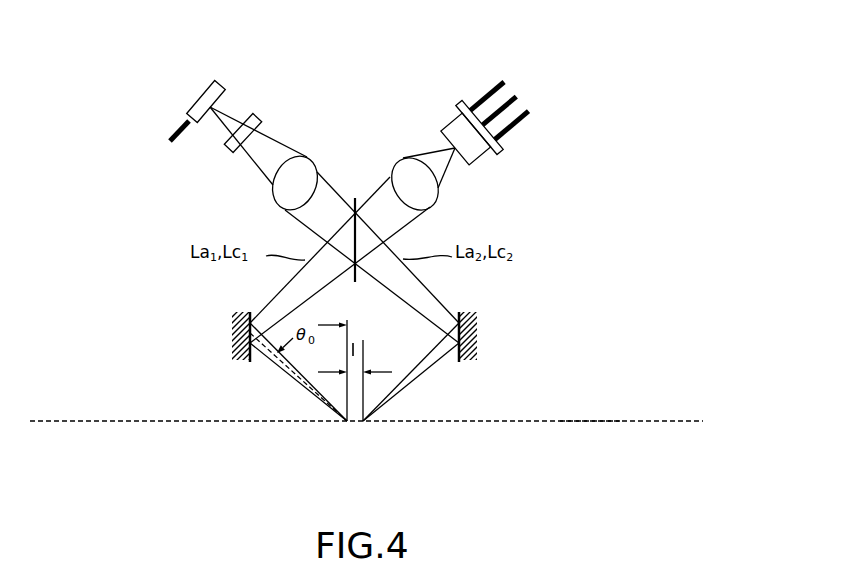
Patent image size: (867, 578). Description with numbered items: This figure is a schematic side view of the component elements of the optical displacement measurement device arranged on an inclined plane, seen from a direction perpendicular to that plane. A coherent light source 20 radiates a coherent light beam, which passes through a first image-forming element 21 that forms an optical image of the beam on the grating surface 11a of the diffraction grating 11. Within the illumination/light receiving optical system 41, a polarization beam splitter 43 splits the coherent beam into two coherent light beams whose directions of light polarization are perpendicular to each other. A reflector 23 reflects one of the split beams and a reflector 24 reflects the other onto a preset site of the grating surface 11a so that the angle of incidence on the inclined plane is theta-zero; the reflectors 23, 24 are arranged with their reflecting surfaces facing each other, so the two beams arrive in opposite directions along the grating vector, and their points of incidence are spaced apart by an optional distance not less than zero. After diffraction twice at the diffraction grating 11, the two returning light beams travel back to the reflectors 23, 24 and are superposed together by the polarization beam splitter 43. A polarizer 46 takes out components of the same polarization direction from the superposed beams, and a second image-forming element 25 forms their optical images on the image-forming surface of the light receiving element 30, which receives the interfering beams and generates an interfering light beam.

The diffraction grating 11 is at (592, 425).
The grating surface 11a is at (592, 413).
The coherent light source 20 is at (459, 103).
The first image-forming element 21 is at (402, 165).
The reflector 23 is at (232, 322).
The reflector 24 is at (478, 328).
The second image-forming element 25 is at (282, 202).
The light receiving element 30 is at (208, 80).
The illumination/light receiving optical system 41 is at (208, 190).
The polarization beam splitter 43 is at (353, 198).
The polarizer 46 is at (253, 112).